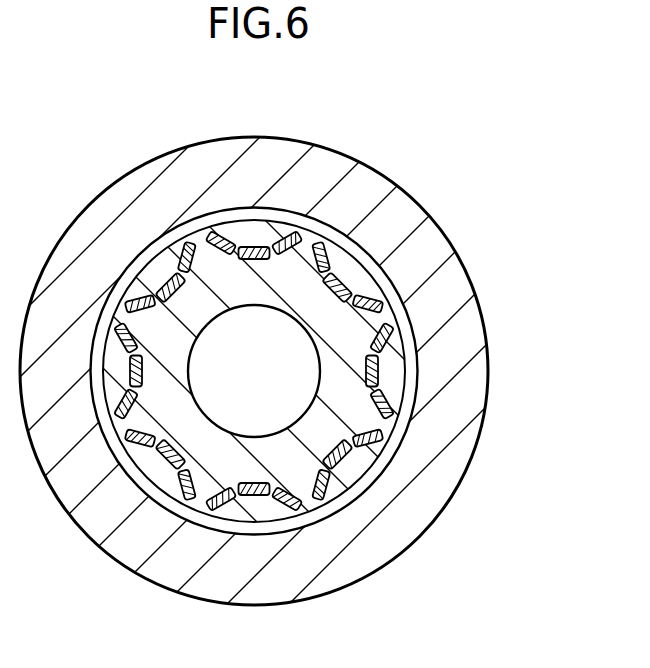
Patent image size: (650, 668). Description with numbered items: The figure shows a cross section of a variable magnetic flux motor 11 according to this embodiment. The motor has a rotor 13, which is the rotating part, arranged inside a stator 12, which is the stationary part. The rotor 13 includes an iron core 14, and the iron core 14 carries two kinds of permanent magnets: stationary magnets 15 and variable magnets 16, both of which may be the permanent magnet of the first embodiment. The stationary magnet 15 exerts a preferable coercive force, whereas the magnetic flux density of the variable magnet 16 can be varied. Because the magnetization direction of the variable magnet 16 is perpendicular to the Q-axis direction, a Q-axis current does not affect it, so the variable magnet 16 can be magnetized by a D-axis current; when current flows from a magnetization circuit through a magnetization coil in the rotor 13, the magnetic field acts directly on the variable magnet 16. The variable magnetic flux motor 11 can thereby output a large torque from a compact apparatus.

The variable magnetic flux motor 11 is at (440, 141).
The stator 12 is at (476, 448).
The rotor 13 is at (468, 191).
The iron core 14 is at (363, 293).
The stationary magnet 15 is at (385, 316).
The variable magnet 16 is at (383, 359).